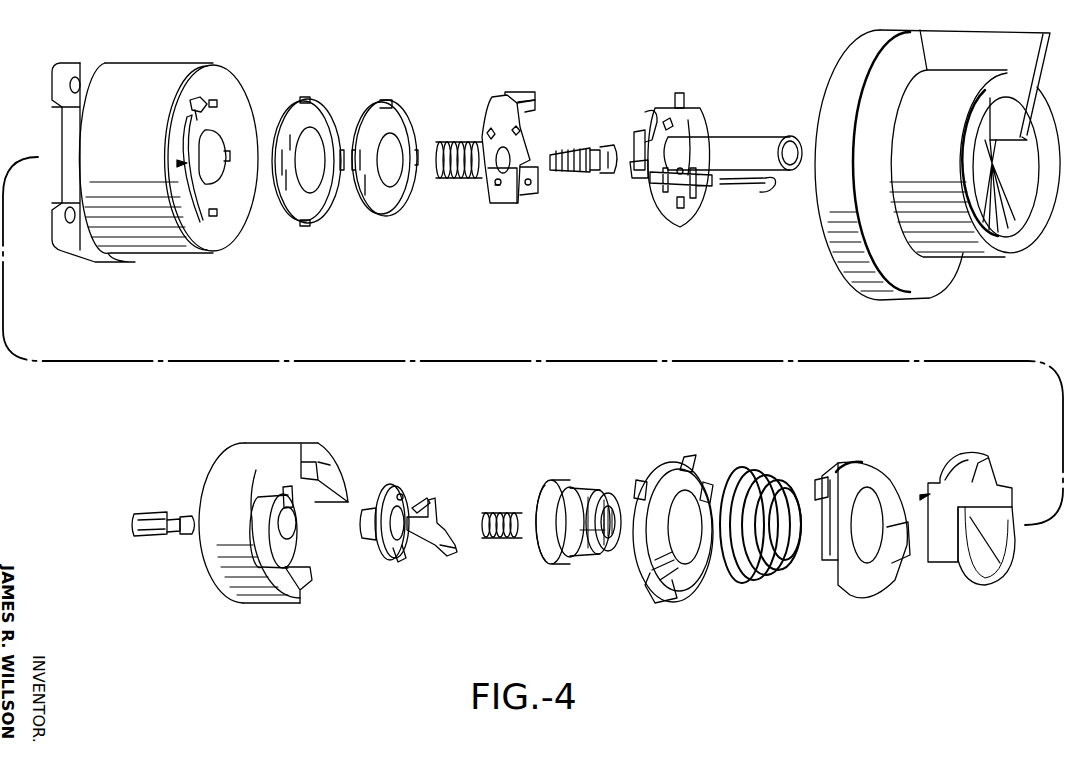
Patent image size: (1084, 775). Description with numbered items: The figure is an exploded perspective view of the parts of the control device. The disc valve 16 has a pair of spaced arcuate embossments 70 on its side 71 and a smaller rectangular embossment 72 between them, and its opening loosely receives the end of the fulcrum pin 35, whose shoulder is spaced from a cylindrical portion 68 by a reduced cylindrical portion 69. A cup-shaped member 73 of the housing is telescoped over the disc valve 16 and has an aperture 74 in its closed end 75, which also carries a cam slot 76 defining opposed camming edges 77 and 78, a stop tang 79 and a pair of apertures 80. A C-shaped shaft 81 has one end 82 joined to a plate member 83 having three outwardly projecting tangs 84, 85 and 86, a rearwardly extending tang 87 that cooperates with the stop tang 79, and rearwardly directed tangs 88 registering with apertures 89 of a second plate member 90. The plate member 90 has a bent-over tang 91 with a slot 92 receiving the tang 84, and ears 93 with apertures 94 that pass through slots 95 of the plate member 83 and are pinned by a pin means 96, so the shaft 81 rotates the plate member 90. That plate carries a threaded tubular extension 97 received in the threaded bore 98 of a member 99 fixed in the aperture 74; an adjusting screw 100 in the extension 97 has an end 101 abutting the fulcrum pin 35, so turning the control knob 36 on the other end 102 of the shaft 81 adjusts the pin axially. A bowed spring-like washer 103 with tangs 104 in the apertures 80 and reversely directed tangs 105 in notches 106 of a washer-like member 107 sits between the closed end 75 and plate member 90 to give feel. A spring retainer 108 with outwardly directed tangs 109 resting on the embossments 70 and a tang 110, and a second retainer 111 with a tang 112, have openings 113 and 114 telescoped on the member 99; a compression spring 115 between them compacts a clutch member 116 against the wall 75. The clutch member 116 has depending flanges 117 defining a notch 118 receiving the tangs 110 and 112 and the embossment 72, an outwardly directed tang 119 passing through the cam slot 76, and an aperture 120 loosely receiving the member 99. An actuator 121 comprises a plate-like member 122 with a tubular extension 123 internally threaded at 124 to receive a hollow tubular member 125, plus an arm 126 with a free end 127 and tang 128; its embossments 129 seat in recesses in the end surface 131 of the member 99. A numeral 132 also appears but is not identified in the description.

The disc valve 16 is at (246, 455).
The fulcrum pin 35 is at (132, 522).
The control knob 36 is at (955, 240).
The cylindrical portion 68 is at (182, 534).
The reduced cylindrical portion 69 is at (172, 518).
The arcuate embossments 70 is at (332, 470).
The side 71 is at (312, 543).
The rectangular embossment 72 is at (280, 470).
The cup-shaped member 73 is at (165, 68).
The aperture 74 is at (228, 152).
The closed end 75 is at (238, 110).
The cam slot 76 is at (180, 163).
The camming edge 77 is at (188, 203).
The camming edge 78 is at (174, 145).
The stop tang 79 is at (201, 97).
The apertures 80 is at (217, 102).
The C-shaped shaft 81 is at (735, 140).
The end 82 is at (690, 135).
The plate member 83 is at (690, 222).
The tang 84 is at (685, 97).
The tang 85 is at (652, 114).
The tang 86 is at (638, 138).
The rearwardly extending tang 87 is at (638, 180).
The rearwardly directed tangs 88 is at (667, 119).
The apertures 89 is at (521, 131).
The plate member 90 is at (488, 115).
The bent over tang 91 is at (530, 92).
The slot 92 is at (526, 108).
The ears 93 is at (490, 185).
The apertures 94 is at (495, 200).
The slots 95 is at (650, 200).
The pin means 96 is at (776, 187).
The tubular extension 97 is at (447, 180).
The threaded bore 98 is at (610, 538).
The fixed member 99 is at (580, 490).
The adjusting screw 100 is at (575, 174).
The end 101 is at (560, 148).
The end 102 is at (786, 137).
The bowed spring-like washer 103 is at (318, 112).
The tangs 104 is at (305, 97).
The reversely directed tangs 105 is at (342, 150).
The notches 106 is at (418, 152).
The washer-like member 107 is at (405, 118).
The spring retainer 108 is at (682, 585).
The outwardly directed tangs 109 is at (692, 458).
The tang 110 is at (638, 482).
The spring retainer 111 is at (880, 466).
The outwardly directed tang 112 is at (818, 488).
The opening 113 is at (708, 485).
The opening 114 is at (845, 468).
The compression spring 115 is at (760, 582).
The clutch member 116 is at (985, 470).
The depending flanges 117 is at (952, 450).
The notch 118 is at (925, 496).
The outwardly directed tang 119 is at (999, 492).
The aperture 120 is at (1005, 553).
The actuator 121 is at (400, 486).
The plate-like member 122 is at (386, 500).
The tubular extension 123 is at (362, 532).
The internal threads 124 is at (403, 508).
The hollow tubular member 125 is at (512, 540).
The arm 126 is at (440, 523).
The free end 127 is at (457, 556).
The outwardly extending tang 128 is at (431, 502).
The embossments 129 is at (402, 558).
The end surface 131 is at (542, 500).
The spring end 132 is at (486, 530).